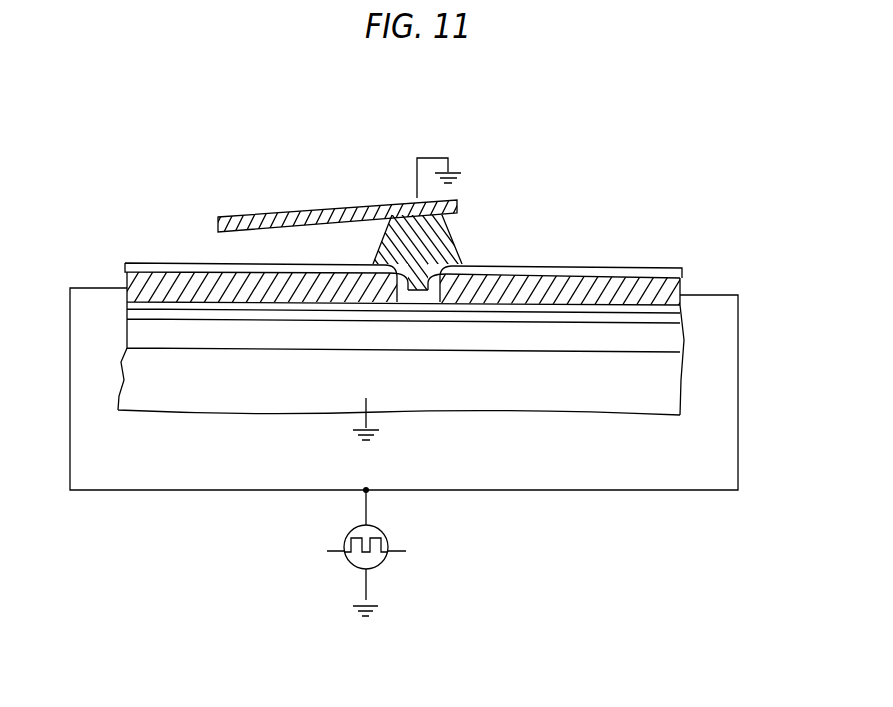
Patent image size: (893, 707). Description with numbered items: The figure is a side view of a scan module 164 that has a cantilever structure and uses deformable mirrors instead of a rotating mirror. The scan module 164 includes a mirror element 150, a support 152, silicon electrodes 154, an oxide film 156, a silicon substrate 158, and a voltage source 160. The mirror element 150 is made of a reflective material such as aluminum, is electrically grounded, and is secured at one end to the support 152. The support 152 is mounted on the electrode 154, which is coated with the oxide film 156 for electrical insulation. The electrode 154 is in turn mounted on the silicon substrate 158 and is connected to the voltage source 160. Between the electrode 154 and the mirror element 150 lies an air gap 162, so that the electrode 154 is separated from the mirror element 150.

The mirror element 150 is at (322, 201).
The support 152 is at (437, 254).
The silicon electrodes 154 is at (592, 292).
The oxide film 156 is at (668, 318).
The silicon substrate 158 is at (663, 377).
The voltage source 160 is at (380, 528).
The air gap 162 is at (224, 246).
The scan module 164 is at (536, 180).